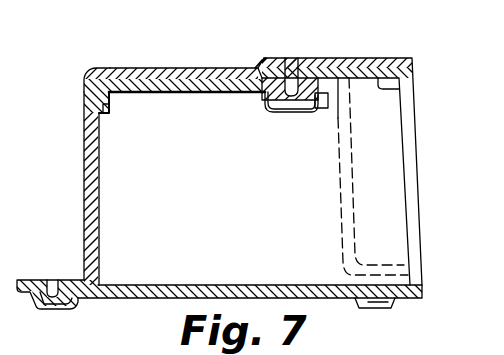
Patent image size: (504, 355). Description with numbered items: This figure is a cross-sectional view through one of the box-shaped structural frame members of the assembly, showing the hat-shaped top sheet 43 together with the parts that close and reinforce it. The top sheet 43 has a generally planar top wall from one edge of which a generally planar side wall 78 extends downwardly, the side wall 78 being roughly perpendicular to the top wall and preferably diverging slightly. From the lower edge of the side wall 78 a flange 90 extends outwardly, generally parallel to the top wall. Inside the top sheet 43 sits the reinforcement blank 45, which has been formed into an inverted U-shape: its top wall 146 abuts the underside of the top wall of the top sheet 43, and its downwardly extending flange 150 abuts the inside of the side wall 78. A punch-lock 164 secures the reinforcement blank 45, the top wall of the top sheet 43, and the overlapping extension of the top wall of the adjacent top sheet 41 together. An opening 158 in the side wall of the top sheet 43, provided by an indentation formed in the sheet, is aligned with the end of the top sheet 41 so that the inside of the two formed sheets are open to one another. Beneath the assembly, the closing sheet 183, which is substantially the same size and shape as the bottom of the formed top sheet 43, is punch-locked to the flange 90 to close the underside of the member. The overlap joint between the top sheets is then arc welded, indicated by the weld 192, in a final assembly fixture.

The top sheet 41 is at (384, 58).
The top sheet 43 is at (83, 69).
The reinforcement blank 45 is at (181, 93).
The side wall 78 is at (88, 157).
The flange 90 is at (30, 280).
The top wall 146 is at (217, 95).
The downwardly extending flange 150 is at (100, 115).
The opening 158 is at (402, 85).
The punch-lock 164 is at (297, 48).
The closing sheet 183 is at (131, 302).
The arc weld 192 is at (249, 67).